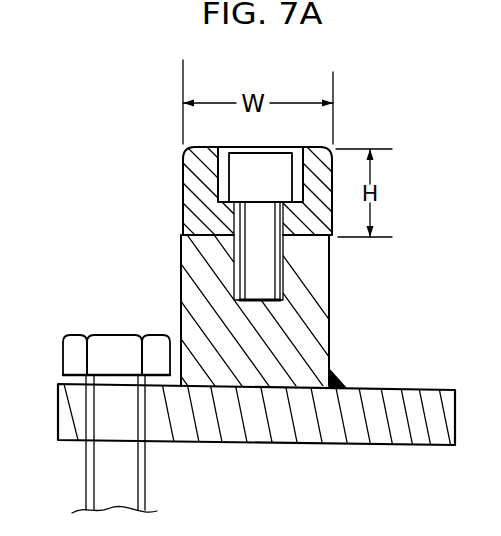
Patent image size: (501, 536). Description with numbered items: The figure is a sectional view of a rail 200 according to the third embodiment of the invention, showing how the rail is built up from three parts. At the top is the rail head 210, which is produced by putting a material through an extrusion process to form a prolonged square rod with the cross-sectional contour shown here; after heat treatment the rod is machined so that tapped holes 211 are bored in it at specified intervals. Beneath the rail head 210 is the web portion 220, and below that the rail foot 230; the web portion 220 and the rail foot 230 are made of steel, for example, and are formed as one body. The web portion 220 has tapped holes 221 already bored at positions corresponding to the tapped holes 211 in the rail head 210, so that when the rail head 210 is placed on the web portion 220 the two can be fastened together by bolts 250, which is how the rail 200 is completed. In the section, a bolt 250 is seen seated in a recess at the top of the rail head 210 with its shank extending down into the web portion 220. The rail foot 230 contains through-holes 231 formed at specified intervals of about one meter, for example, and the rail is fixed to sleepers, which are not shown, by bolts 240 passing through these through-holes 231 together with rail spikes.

The rail 200 is at (492, 120).
The rail head 210 is at (190, 206).
The tapped holes 211 is at (215, 168).
The web portion 220 is at (330, 328).
The tapped holes 221 is at (232, 256).
The rail foot 230 is at (393, 437).
The through-holes 231 is at (90, 418).
The bolts 240 is at (69, 340).
The bolts 250 is at (272, 170).